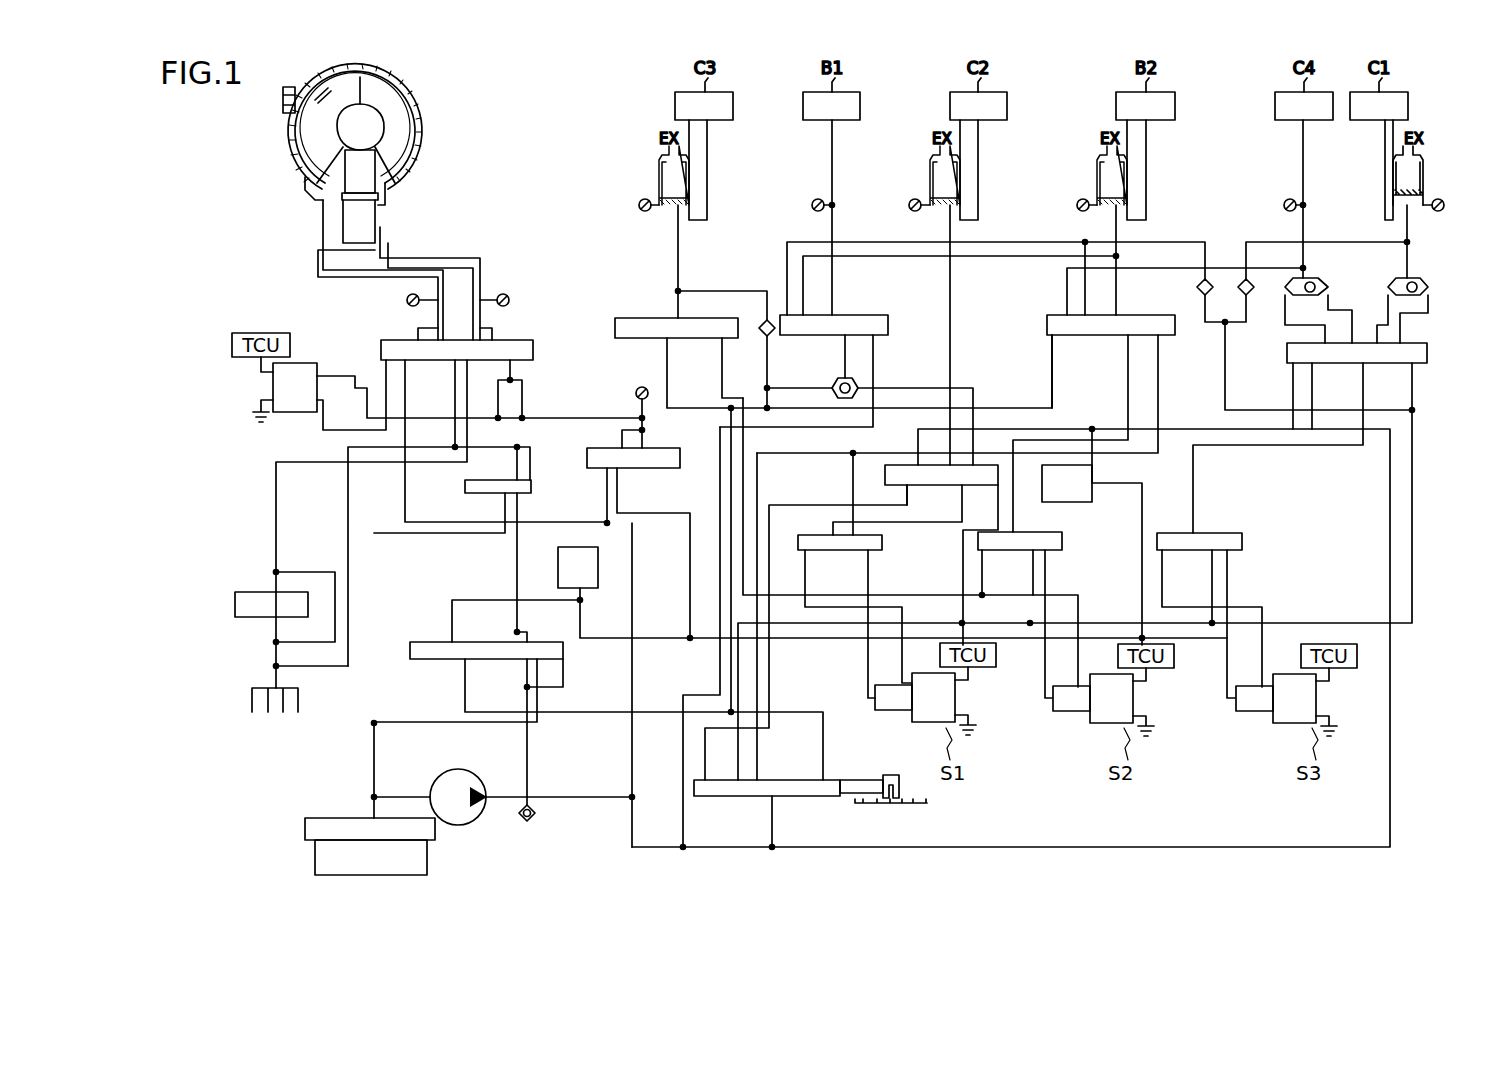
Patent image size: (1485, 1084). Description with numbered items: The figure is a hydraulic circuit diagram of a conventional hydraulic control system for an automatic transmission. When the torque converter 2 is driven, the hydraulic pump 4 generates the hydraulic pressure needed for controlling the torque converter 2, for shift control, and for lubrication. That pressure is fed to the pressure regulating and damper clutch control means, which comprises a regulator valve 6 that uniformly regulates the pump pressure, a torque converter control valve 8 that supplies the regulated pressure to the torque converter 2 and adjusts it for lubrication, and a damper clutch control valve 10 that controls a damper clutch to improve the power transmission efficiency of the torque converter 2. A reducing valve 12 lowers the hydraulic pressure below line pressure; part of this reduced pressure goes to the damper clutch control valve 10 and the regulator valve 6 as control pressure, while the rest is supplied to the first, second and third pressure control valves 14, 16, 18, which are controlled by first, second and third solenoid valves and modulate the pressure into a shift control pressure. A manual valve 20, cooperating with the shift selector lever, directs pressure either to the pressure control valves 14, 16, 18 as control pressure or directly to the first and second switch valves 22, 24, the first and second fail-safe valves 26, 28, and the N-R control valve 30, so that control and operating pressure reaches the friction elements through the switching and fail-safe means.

The torque converter 2 is at (422, 131).
The hydraulic pump 4 is at (476, 820).
The regulator valve 6 is at (430, 640).
The torque converter control valve 8 is at (535, 479).
The damper clutch control valve 10 is at (522, 338).
The reducing valve 12 is at (685, 470).
The first pressure control valve 14 is at (886, 544).
The second pressure control valve 16 is at (1065, 546).
The third pressure control valve 18 is at (1250, 543).
The manual valve 20 is at (858, 778).
The first switch valve 22 is at (892, 462).
The second switch valve 24 is at (1418, 343).
The first fail-safe valve 26 is at (888, 310).
The second fail-safe valve 28 is at (1045, 314).
The N-R control valve 30 is at (628, 312).